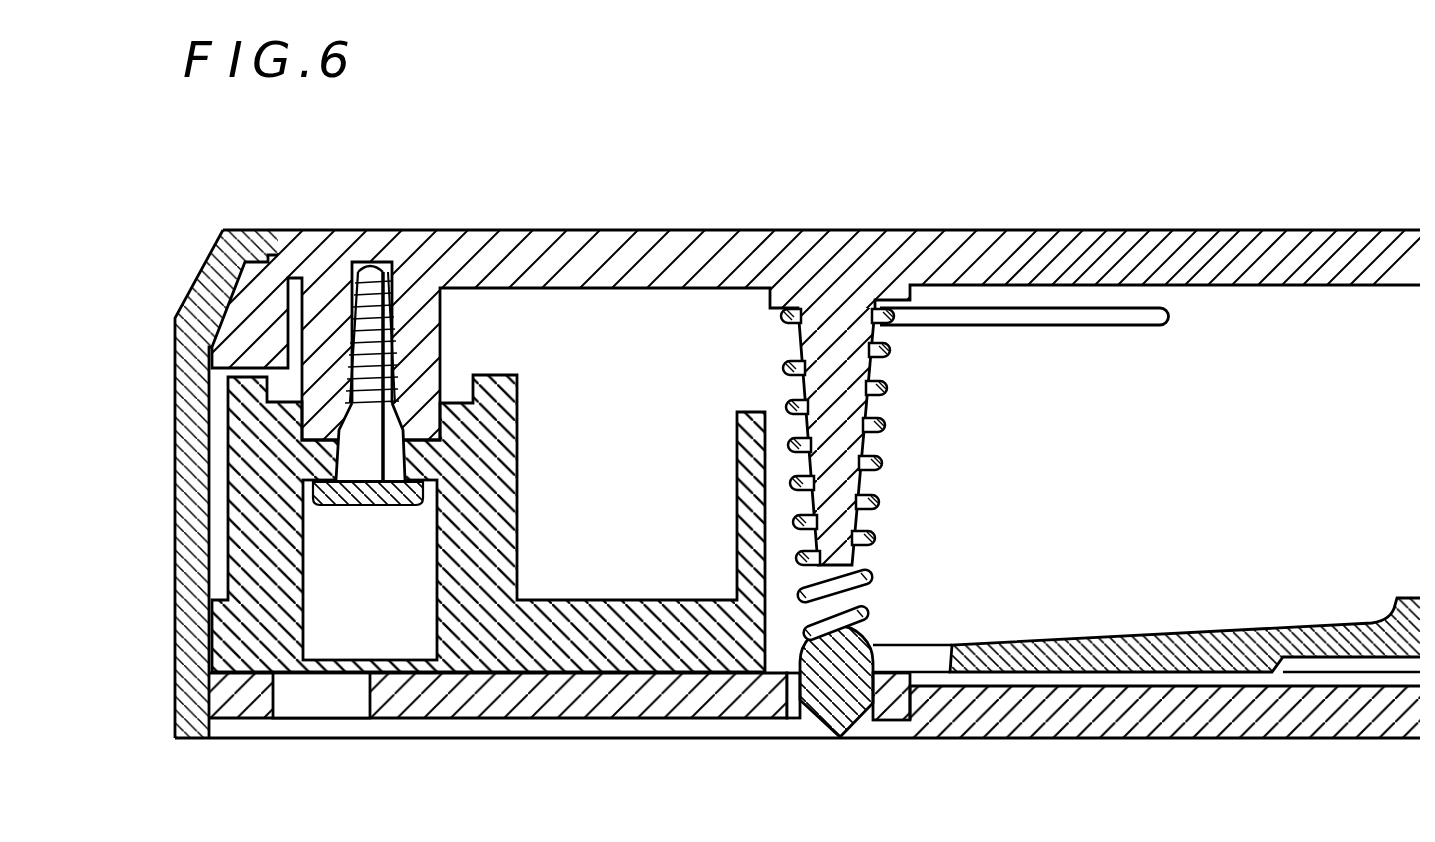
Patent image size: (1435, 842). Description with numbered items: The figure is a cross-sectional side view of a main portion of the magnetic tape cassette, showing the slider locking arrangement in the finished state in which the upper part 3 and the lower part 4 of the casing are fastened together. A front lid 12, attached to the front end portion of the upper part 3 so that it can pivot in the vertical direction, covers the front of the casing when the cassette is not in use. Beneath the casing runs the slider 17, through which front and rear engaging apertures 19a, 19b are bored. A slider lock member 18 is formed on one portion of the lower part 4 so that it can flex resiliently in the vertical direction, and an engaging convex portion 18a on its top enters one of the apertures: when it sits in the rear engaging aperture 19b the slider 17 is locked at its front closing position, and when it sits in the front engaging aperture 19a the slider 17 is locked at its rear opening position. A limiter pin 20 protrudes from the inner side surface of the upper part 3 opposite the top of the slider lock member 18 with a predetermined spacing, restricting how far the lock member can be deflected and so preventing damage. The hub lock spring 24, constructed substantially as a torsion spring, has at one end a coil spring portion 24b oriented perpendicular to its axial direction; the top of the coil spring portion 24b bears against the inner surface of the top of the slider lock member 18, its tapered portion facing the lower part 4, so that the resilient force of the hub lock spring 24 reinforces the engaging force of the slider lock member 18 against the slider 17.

The upper part 3 is at (668, 231).
The lower part 4 is at (603, 708).
The front lid 12 is at (176, 471).
The slider 17 is at (1033, 728).
The slider lock member 18 is at (1025, 647).
The engaging convex portion 18a is at (839, 738).
The front engaging aperture 19a is at (283, 716).
The rear engaging aperture 19b is at (796, 719).
The limiter pin 20 is at (855, 405).
The hub lock spring 24 is at (1133, 326).
The coil spring portion 24b is at (893, 462).